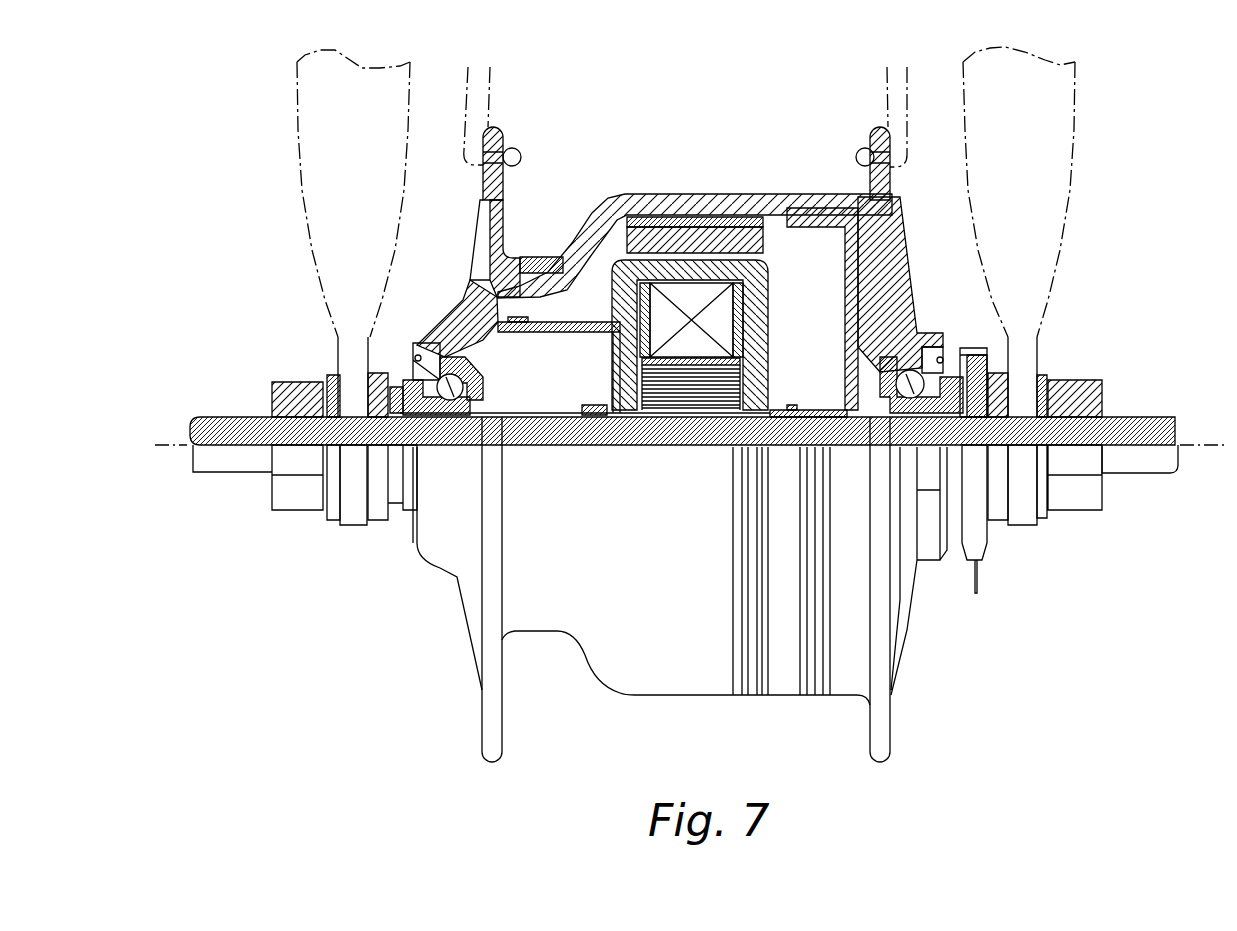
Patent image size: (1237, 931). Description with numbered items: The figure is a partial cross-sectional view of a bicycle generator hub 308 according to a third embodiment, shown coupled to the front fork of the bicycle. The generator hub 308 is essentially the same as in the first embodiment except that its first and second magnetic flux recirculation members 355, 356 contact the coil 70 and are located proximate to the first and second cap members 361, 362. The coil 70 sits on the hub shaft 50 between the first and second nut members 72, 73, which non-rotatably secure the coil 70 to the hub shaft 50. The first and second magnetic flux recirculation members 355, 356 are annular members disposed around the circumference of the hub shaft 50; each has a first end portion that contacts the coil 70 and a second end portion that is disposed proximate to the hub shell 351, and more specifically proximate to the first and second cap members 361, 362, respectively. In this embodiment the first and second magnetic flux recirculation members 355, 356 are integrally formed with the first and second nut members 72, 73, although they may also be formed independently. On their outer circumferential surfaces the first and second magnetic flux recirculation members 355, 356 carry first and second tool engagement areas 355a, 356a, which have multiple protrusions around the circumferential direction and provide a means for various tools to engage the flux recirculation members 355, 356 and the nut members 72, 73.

The hub shaft 50 is at (223, 437).
The coil 70 is at (679, 257).
The first nut member 72 is at (590, 417).
The second nut member 73 is at (770, 418).
The bicycle generator hub 308 is at (648, 697).
The hub shell 351 is at (743, 193).
The first magnetic flux recirculation member 355 is at (550, 317).
The first tool engagement area 355a is at (493, 213).
The second magnetic flux recirculation member 356 is at (797, 317).
The second tool engagement area 356a is at (860, 245).
The first cap member 361 is at (460, 323).
The second cap member 362 is at (893, 307).